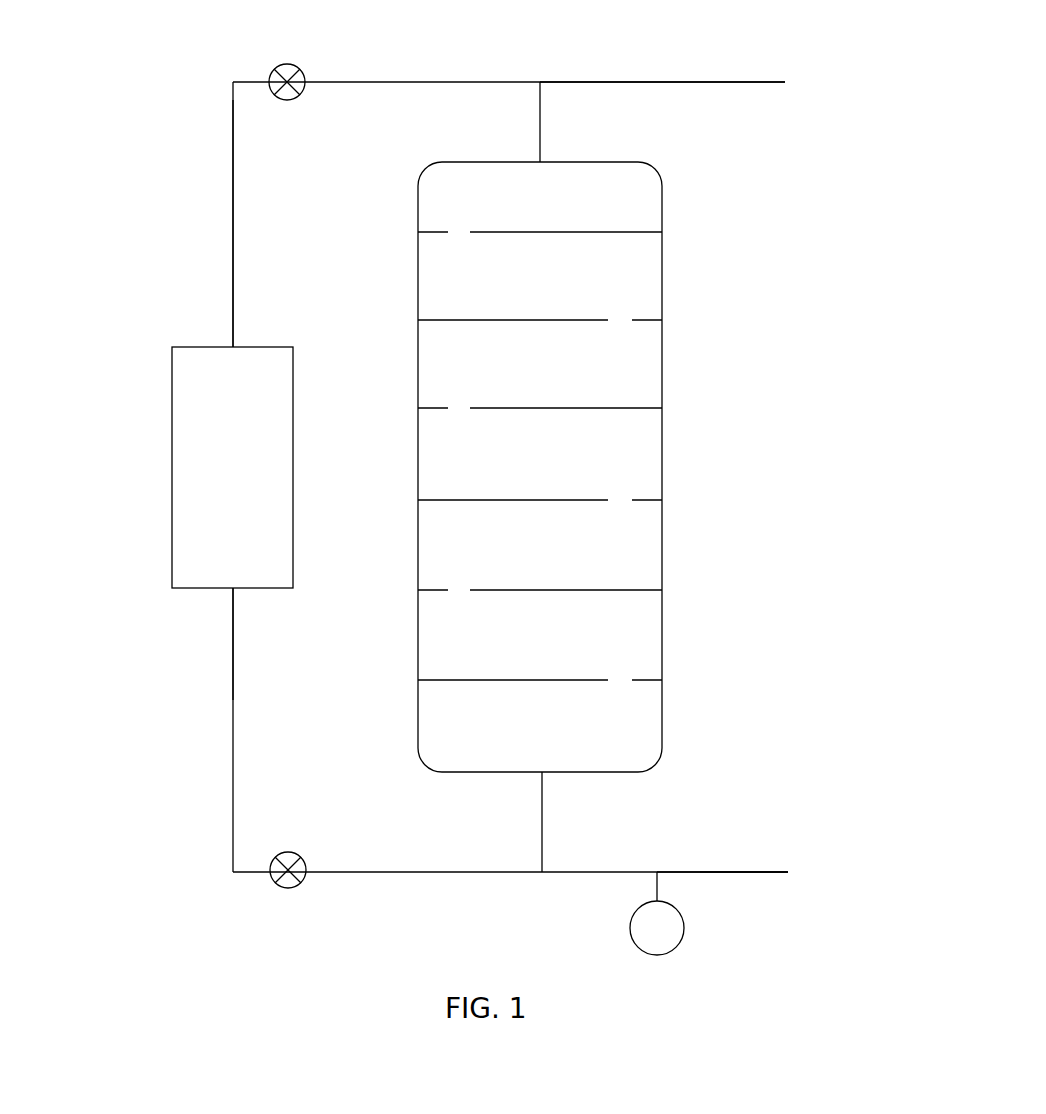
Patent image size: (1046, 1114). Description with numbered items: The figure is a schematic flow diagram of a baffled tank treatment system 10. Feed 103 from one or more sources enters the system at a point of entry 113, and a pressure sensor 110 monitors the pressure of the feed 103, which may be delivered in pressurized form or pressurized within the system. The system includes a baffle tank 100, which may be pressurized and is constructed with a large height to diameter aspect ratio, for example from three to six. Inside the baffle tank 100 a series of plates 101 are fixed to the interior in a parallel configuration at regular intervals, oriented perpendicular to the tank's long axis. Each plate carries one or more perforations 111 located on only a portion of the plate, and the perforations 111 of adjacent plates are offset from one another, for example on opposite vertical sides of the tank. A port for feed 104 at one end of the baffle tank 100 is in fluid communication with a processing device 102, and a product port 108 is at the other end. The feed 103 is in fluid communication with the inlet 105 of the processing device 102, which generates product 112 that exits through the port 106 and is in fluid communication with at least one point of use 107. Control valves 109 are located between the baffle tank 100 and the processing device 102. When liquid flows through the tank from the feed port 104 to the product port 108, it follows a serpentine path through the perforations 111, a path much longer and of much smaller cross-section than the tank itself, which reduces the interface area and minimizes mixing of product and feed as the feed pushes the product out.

The baffled tank treatment system 10 is at (148, 112).
The baffle tank 100 is at (672, 287).
The plates 101 is at (583, 586).
The processing device 102 is at (200, 480).
The feed 103 is at (751, 899).
The port for feed 104 is at (544, 776).
The inlet 105 is at (242, 593).
The port 106 is at (231, 342).
The point of use 107 is at (784, 101).
The product port 108 is at (542, 159).
The control valves 109 is at (282, 62).
The pressure sensor 110 is at (674, 944).
The perforations 111 is at (600, 318).
The product 112 is at (230, 171).
The point of entry 113 is at (736, 838).